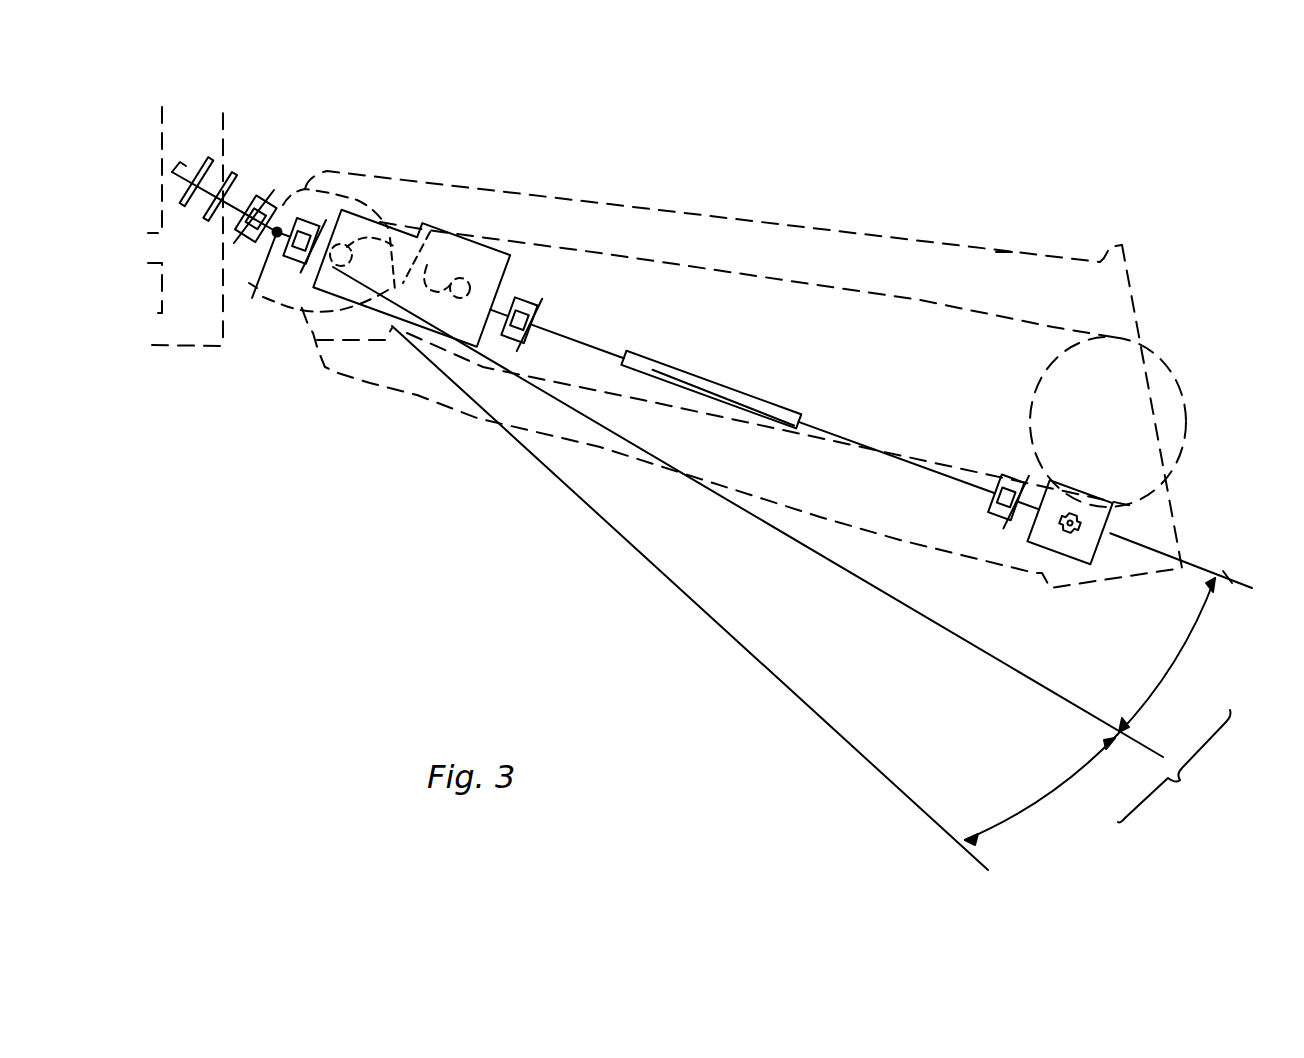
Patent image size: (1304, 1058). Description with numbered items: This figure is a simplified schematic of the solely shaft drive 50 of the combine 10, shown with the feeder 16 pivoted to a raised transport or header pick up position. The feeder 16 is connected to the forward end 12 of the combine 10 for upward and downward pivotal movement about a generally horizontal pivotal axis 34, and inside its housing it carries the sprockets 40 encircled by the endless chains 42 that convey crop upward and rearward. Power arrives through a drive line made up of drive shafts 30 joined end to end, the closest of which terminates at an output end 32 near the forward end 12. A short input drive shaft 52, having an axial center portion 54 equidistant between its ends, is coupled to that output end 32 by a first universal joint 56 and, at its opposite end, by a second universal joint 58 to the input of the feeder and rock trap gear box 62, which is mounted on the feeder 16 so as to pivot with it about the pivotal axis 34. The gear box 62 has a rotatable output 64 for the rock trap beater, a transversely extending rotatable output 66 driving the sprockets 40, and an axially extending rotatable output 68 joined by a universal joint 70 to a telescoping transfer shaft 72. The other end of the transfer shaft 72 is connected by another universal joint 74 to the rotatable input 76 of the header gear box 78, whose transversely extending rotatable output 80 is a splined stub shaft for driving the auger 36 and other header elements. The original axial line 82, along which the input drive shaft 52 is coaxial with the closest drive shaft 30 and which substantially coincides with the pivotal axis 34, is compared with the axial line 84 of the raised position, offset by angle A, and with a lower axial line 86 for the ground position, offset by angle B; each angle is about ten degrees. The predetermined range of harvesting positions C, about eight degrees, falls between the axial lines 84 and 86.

The combine 10 is at (1103, 196).
The forward end 12 is at (200, 346).
The feeder 16 is at (858, 233).
The drive shafts 30 is at (212, 220).
The output end 32 is at (222, 226).
The pivotal axis 34 is at (252, 298).
The auger 36 is at (1010, 250).
The sprockets 40 is at (487, 232).
The chains 42 is at (652, 257).
The shaft drive 50 is at (321, 132).
The input drive shaft 52 is at (287, 216).
The axial center portion 54 is at (279, 230).
The first universal joint 56 is at (262, 197).
The second universal joint 58 is at (345, 196).
The feeder and rock trap gear box 62 is at (396, 322).
The rotatable output 64 is at (362, 264).
The transversely extending rotatable output 66 is at (436, 265).
The axially extending rotatable output 68 is at (505, 301).
The universal joint 70 is at (537, 306).
The transfer shaft 72 is at (764, 400).
The universal joint 74 is at (990, 510).
The rotatable input 76 is at (1040, 484).
The header gear box 78 is at (1040, 547).
The rotatable output 80 is at (1076, 535).
The axial line 82 is at (1084, 708).
The axial line 84 is at (1231, 576).
The axial line 86 is at (976, 858).
The angle A is at (1182, 656).
The angle B is at (1053, 786).
The range of harvesting positions C is at (1174, 766).